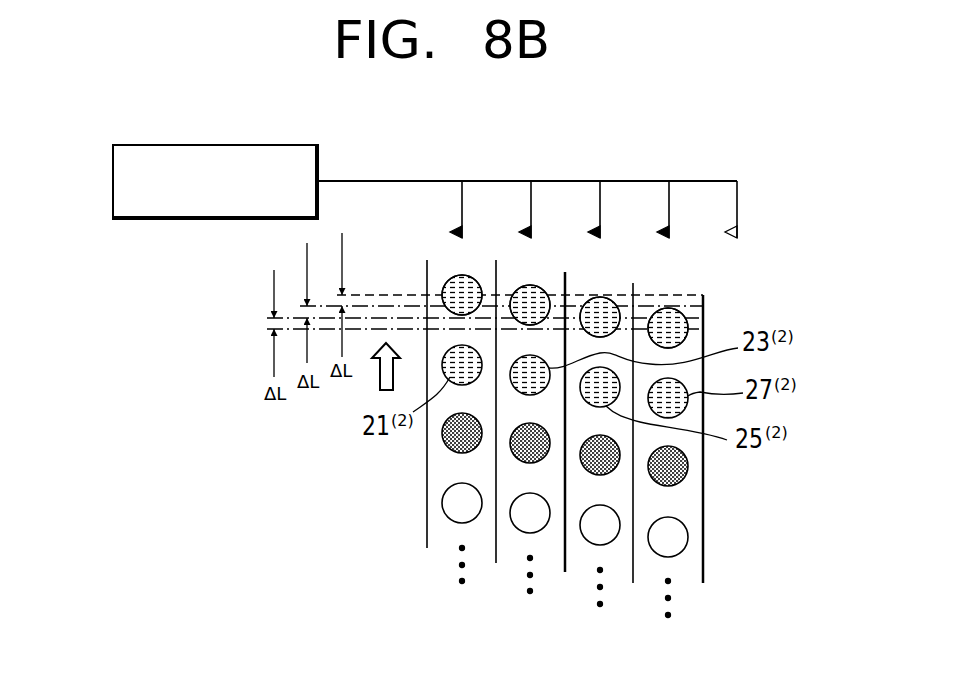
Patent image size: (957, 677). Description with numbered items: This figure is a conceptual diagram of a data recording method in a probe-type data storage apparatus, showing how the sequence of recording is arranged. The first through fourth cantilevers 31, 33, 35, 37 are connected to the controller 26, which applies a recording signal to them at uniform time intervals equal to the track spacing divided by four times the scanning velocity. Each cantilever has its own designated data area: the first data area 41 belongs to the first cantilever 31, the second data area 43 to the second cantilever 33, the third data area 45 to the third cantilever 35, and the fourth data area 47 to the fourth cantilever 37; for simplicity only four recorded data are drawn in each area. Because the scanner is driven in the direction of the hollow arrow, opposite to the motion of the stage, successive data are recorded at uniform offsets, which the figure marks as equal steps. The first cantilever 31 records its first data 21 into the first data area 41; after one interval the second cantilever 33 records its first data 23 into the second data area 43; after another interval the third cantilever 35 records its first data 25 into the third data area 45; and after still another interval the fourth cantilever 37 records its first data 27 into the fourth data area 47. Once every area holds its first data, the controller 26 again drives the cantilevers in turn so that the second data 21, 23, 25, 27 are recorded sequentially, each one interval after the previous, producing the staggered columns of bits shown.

The controller 26 is at (113, 181).
The first cantilever 31 is at (462, 200).
The second cantilever 33 is at (531, 200).
The third cantilever 35 is at (600, 200).
The fourth cantilever 37 is at (669, 200).
The data recorded by the first cantilever 21 is at (470, 276).
The data recorded by the second cantilever 23 is at (538, 286).
The data recorded by the third cantilever 25 is at (605, 298).
The data recorded by the fourth cantilever 27 is at (676, 309).
The first data area 41 is at (437, 531).
The second data area 43 is at (515, 548).
The third data area 45 is at (583, 558).
The fourth data area 47 is at (655, 572).